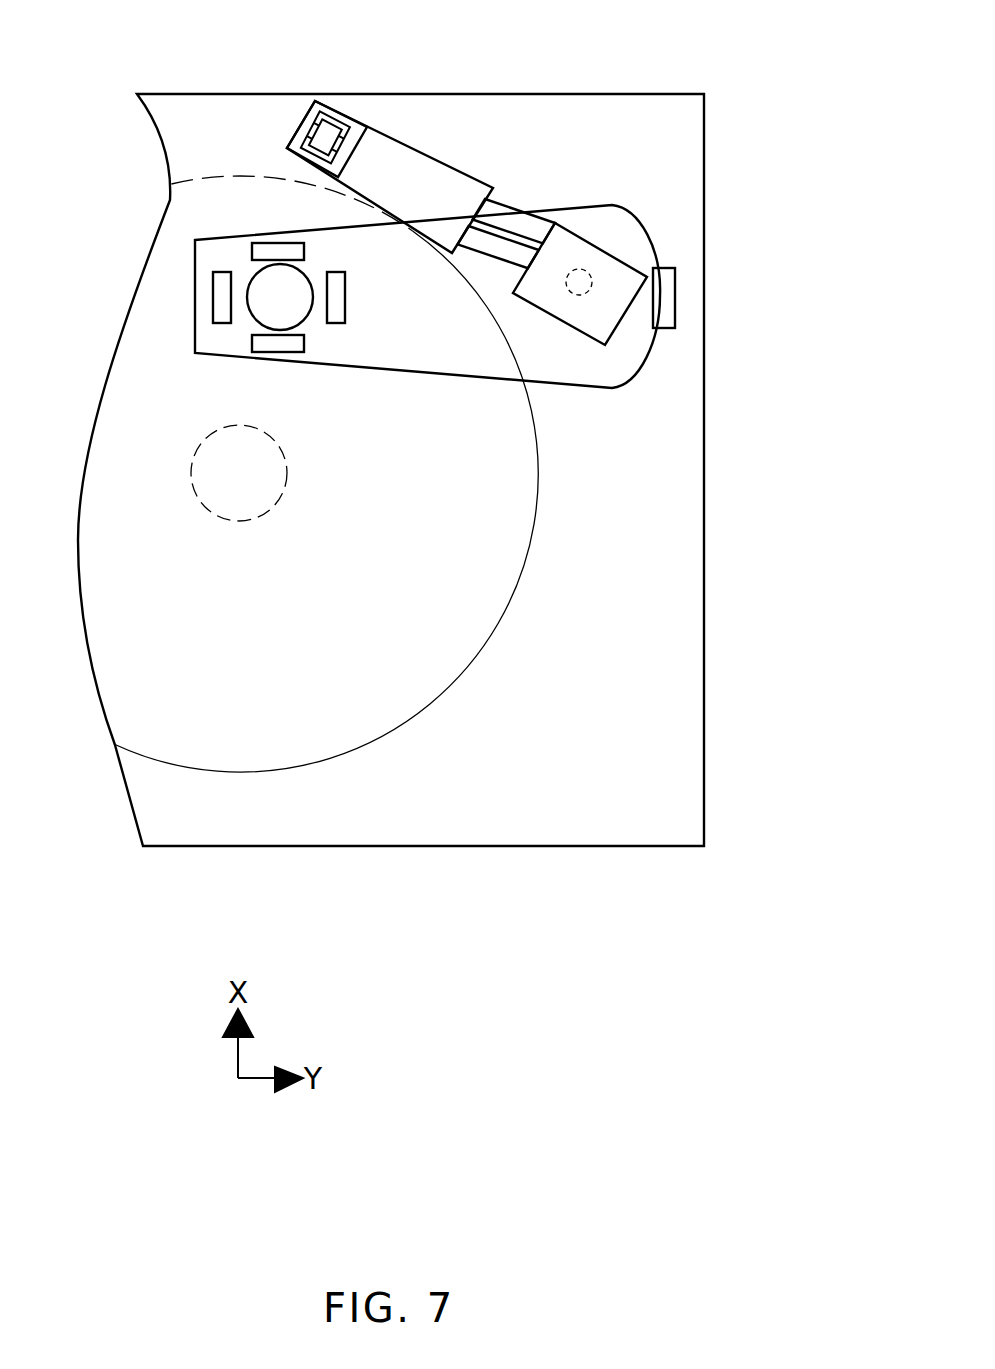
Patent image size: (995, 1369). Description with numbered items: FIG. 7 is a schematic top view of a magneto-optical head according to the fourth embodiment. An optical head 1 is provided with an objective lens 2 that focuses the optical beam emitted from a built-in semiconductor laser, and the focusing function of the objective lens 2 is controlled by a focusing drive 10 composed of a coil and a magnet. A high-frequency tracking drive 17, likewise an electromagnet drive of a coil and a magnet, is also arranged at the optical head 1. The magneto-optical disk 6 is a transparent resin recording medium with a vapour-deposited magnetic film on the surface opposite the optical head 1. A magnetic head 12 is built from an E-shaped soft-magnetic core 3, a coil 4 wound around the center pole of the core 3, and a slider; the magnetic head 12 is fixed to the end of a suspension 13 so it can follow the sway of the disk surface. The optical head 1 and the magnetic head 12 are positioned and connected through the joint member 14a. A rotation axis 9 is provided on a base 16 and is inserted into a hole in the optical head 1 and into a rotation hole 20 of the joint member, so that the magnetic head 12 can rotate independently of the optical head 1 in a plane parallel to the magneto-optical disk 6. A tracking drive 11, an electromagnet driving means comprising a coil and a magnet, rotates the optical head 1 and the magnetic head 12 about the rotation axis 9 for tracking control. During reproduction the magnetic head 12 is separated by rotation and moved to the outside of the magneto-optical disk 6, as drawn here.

The optical head 1 is at (412, 345).
The objective lens 2 is at (267, 313).
The core 3 is at (307, 120).
The coil 4 is at (341, 128).
The magneto-optical disk 6 is at (173, 765).
The rotation axis 9 is at (695, 333).
The rotation hole 20 is at (590, 287).
The focusing drive 10 is at (335, 275).
The tracking drive 11 is at (662, 295).
The magnetic head 12 is at (420, 177).
The suspension 13 is at (492, 258).
The joint member 14a is at (580, 257).
The base 16 is at (452, 796).
The high-frequency tracking drive 17 is at (280, 252).